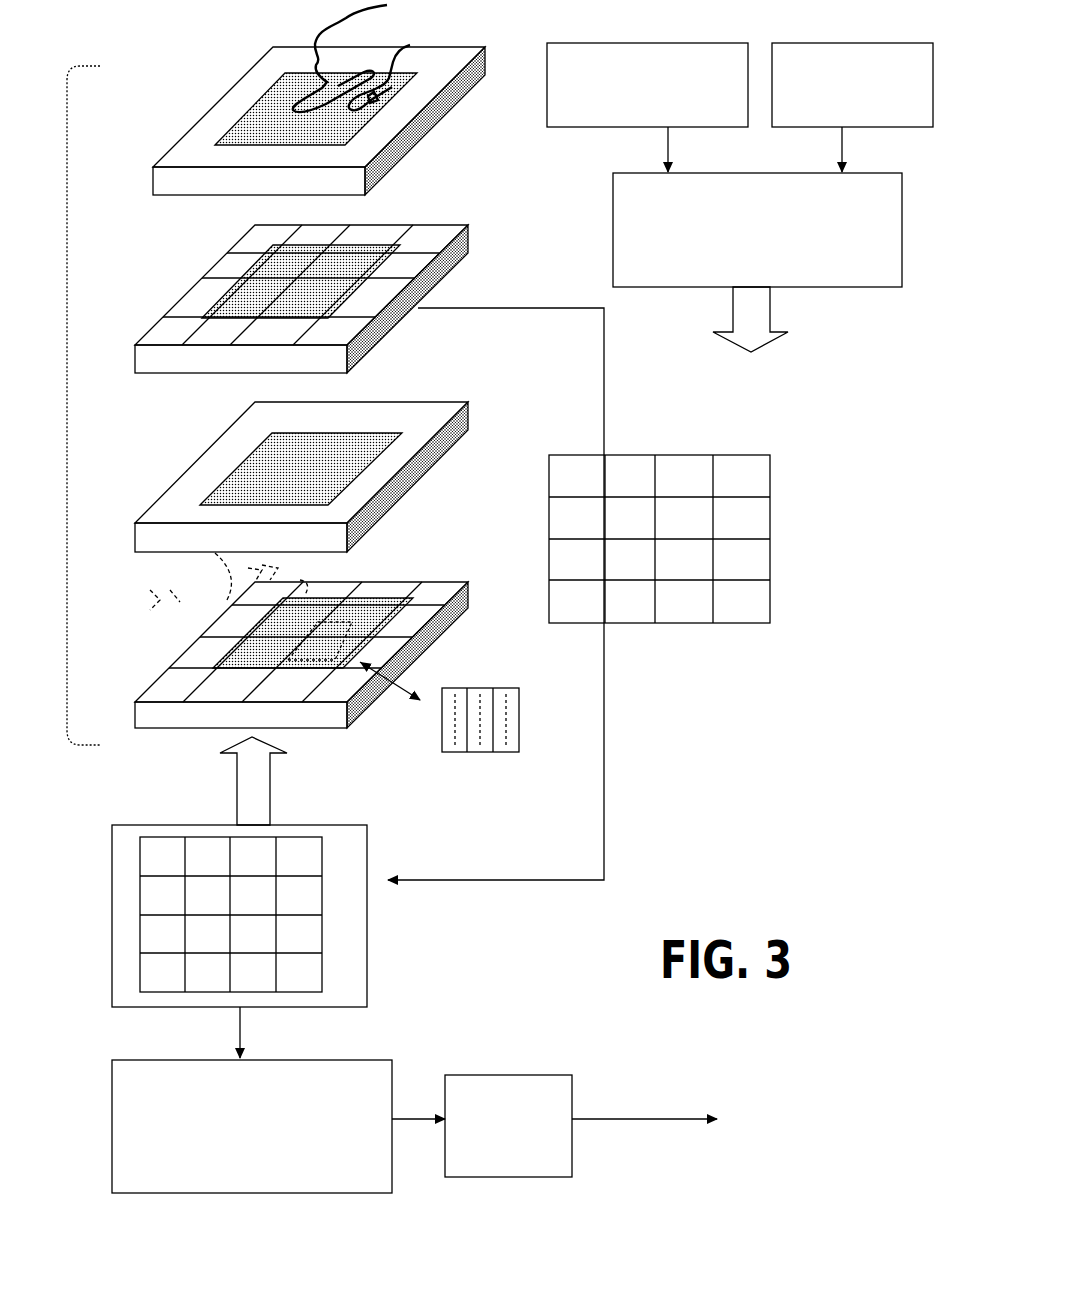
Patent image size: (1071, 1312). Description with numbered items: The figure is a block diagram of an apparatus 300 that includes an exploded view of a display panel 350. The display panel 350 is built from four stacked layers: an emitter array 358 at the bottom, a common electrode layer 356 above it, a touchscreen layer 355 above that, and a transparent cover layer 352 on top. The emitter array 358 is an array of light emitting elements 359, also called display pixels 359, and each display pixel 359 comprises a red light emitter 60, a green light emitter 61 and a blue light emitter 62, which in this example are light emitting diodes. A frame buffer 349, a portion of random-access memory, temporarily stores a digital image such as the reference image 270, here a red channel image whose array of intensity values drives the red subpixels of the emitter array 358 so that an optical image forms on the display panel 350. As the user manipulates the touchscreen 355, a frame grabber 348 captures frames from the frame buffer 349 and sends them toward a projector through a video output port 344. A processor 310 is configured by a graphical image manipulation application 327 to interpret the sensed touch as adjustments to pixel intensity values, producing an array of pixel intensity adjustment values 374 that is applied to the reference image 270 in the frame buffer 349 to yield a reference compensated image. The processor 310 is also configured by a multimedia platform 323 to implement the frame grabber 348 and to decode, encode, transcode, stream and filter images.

The apparatus 300 is at (128, 40).
The display panel 350 is at (67, 412).
The transparent cover layer 352 is at (410, 183).
The touchscreen layer 355 is at (408, 345).
The common electrode layer 356 is at (405, 495).
The emitter array 358 is at (432, 637).
The light emitting element 359 is at (350, 592).
The red light emitter 60 is at (452, 720).
The green light emitter 61 is at (488, 749).
The blue light emitter 62 is at (516, 720).
The intensity adjustment array 374 is at (715, 623).
The graphical image manipulation application 327 is at (647, 107).
The multimedia platform 323 is at (852, 107).
The processor 310 is at (757, 262).
The reference image 270 is at (140, 915).
The frame buffer 349 is at (368, 980).
The frame grabber 348 is at (278, 1126).
The video output port 344 is at (475, 1176).